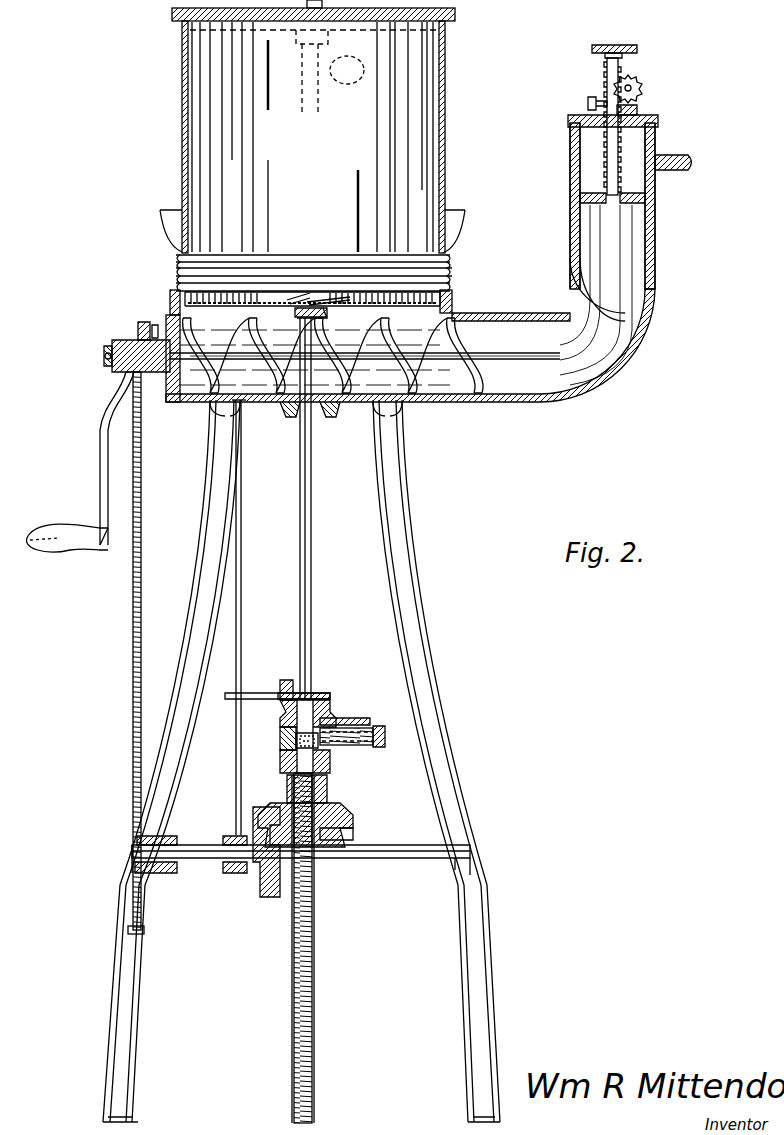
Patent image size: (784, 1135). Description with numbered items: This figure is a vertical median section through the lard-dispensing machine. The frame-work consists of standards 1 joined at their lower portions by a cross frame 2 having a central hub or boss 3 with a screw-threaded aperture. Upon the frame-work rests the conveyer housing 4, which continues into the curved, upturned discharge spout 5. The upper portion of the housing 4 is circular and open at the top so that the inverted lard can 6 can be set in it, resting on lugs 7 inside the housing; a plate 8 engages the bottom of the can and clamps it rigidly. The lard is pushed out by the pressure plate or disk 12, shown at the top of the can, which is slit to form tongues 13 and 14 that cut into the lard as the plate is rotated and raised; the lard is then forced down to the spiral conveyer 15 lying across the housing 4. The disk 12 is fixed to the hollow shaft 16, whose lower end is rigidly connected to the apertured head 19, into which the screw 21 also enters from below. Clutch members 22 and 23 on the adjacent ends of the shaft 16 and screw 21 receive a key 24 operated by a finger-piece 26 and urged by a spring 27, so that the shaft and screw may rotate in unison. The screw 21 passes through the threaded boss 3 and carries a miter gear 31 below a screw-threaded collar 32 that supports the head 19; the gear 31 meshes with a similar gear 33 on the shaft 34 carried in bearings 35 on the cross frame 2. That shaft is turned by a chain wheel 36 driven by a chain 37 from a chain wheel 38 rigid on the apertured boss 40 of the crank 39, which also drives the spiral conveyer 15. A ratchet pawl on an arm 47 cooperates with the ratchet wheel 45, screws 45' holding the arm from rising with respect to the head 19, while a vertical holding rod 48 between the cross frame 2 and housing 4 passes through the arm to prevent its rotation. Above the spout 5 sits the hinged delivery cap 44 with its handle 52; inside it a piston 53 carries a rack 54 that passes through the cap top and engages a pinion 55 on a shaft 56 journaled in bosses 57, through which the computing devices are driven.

The standards 1 is at (210, 493).
The cross frame 2 is at (420, 858).
The hub or boss 3 is at (330, 838).
The conveyer housing 4 is at (418, 402).
The discharge spout 5 is at (570, 218).
The lard can 6 is at (445, 160).
The lugs 7 is at (448, 302).
The plate 8 is at (458, 13).
The pressure plate or disk 12 is at (352, 42).
The upwardly extended tongue 13 is at (297, 314).
The downwardly extended tongue 14 is at (333, 317).
The spiral conveyer 15 is at (510, 420).
The hollow shaft 16 is at (311, 578).
The apertured head 19 is at (290, 716).
The screw 21 is at (314, 948).
The clutch member 22 is at (284, 735).
The clutch member 23 is at (285, 752).
The key 24 is at (345, 718).
The finger-piece 26 is at (385, 735).
The spring 27 is at (378, 748).
The miter gear 31 is at (330, 812).
The screw-threaded collar 32 is at (287, 787).
The gear 33 is at (262, 875).
The shaft 34 is at (235, 875).
The bearings 35 is at (170, 838).
The chain wheel 36 is at (128, 898).
The chain 37 is at (133, 768).
The chain wheel 38 is at (145, 322).
The crank 39 is at (100, 478).
The apertured boss 40 is at (125, 340).
The delivery cap 44 is at (570, 162).
The ratchet wheel 45 is at (332, 693).
The screws 45' is at (320, 672).
The arm 47 is at (258, 693).
The vertical holding rod 48 is at (243, 565).
The handle 52 is at (692, 172).
The plate or piston 53 is at (628, 205).
The rack 54 is at (625, 145).
The pinion 55 is at (642, 88).
The shaft 56 is at (630, 86).
The bosses 57 is at (640, 110).